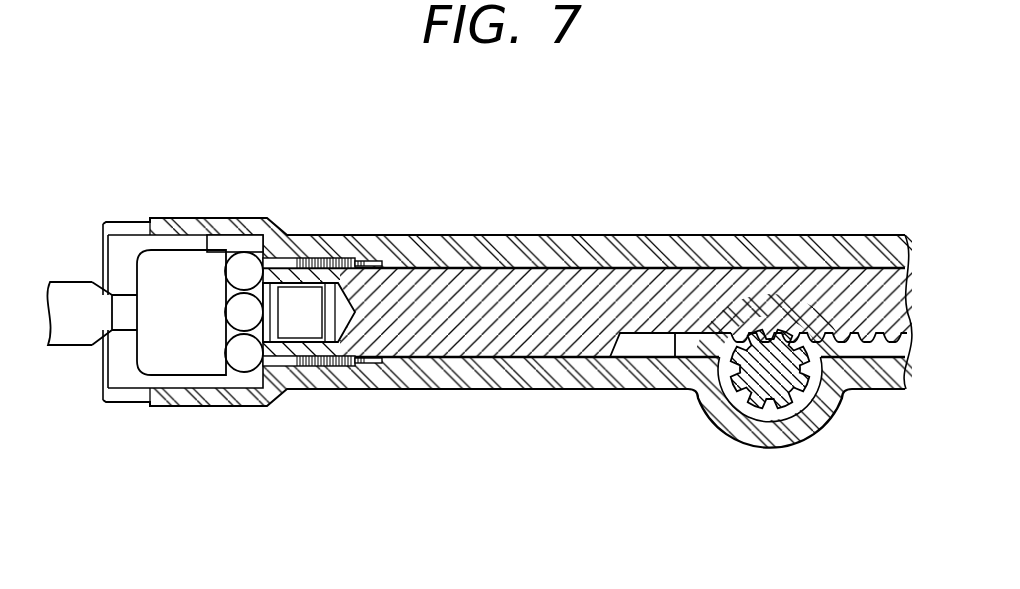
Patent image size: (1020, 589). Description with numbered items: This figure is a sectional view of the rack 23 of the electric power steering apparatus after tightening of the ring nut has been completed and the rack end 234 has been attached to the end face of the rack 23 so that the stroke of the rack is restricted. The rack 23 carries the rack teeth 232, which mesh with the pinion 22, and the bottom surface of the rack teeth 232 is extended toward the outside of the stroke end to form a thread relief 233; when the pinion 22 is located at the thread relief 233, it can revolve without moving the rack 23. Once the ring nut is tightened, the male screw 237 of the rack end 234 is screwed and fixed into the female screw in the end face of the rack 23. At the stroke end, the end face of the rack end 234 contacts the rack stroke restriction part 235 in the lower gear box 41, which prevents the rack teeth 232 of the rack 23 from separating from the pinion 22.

The pinion 22 is at (765, 408).
The rack 23 is at (522, 277).
The lower gear box 41 is at (641, 247).
The rack teeth 232 is at (853, 347).
The thread relief 233 is at (672, 360).
The rack end 234 is at (193, 360).
The rack stroke restriction part 235 is at (240, 233).
The male screw 237 is at (300, 312).